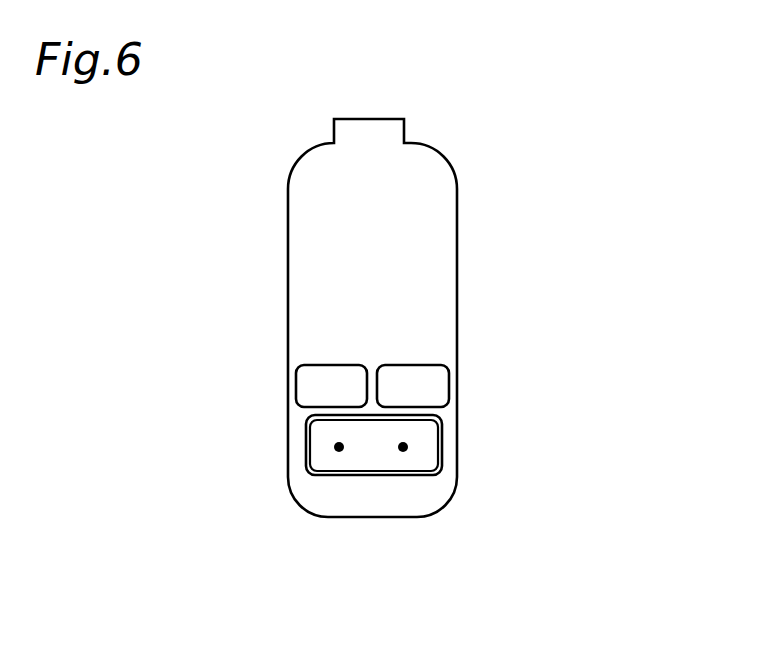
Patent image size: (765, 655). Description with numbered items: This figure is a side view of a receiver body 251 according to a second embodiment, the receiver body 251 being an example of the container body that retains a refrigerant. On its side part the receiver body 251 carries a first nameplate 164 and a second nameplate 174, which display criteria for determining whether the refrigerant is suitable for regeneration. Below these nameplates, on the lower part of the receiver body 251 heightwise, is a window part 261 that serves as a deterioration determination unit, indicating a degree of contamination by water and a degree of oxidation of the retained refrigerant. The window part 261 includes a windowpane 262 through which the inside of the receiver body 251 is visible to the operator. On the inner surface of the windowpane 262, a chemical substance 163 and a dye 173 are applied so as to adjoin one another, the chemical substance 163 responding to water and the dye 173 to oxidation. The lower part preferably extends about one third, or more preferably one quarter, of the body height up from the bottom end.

The receiver body 251 is at (463, 246).
The first nameplate 164 is at (296, 388).
The second nameplate 174 is at (449, 390).
The window part 261 is at (298, 446).
The windowpane 262 is at (368, 457).
The chemical substance 163 is at (339, 447).
The dye 173 is at (403, 447).